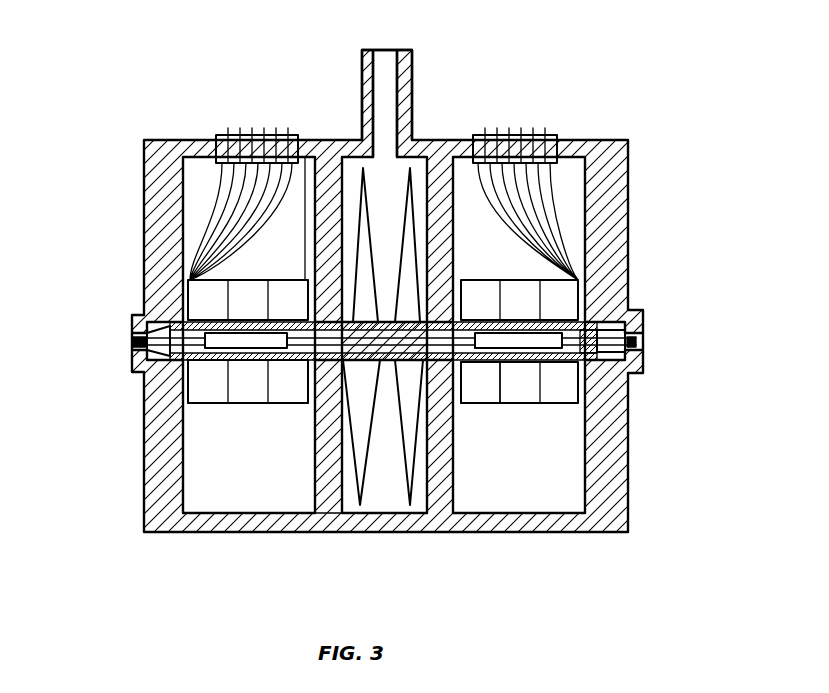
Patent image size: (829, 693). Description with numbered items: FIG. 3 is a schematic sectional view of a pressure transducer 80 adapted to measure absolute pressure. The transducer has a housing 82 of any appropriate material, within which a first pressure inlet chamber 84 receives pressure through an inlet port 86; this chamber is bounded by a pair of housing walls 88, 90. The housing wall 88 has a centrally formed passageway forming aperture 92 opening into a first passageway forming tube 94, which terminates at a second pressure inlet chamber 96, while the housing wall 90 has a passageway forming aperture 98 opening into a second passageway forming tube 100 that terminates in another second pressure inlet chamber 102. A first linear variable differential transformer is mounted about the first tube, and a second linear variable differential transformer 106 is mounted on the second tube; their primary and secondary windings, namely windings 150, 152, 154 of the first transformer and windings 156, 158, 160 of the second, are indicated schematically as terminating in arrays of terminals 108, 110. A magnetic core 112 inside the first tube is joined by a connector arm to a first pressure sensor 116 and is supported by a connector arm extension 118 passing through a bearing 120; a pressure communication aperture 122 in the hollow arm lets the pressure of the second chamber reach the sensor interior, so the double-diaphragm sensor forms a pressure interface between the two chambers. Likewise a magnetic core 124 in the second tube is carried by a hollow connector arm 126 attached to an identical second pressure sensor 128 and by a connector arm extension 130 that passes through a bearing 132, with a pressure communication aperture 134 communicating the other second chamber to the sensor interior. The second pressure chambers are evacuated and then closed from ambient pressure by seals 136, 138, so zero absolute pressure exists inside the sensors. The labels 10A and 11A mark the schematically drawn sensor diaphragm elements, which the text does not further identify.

The pressure transducer 80 is at (424, 291).
The housing 82 is at (605, 182).
The first pressure inlet chamber 84 is at (404, 172).
The inlet port 86 is at (415, 65).
The housing wall 88 is at (447, 500).
The housing wall 90 is at (337, 498).
The passageway forming aperture 92 is at (452, 408).
The first passageway forming tube 94 is at (470, 335).
The second pressure inlet chamber 96 is at (640, 302).
The passageway forming aperture 98 is at (275, 368).
The second passageway forming tube 100 is at (235, 348).
The other second pressure inlet chamber 102 is at (150, 352).
The second linear variable differential transformer 106 is at (302, 275).
The array of terminals 108 is at (515, 132).
The array of terminals 110 is at (290, 132).
The magnetic core 112 is at (588, 332).
The first pressure sensor 116 is at (386, 518).
The connector arm extension 118 is at (612, 378).
The bearing 120 is at (640, 355).
The pressure communication aperture 122 is at (620, 300).
The magnetic core 124 is at (195, 364).
The connector arm 126 is at (326, 410).
The second pressure sensor 128 is at (352, 500).
The connector arm extension 130 is at (205, 358).
The bearing 132 is at (160, 340).
The pressure communication aperture 134 is at (255, 362).
The seal 136 is at (645, 344).
The seal 138 is at (133, 343).
The primary winding 150 is at (520, 410).
The first secondary winding 152 is at (560, 406).
The second secondary winding 154 is at (512, 406).
The primary winding 156 is at (208, 262).
The first secondary winding 158 is at (288, 292).
The second secondary winding 160 is at (210, 282).
The upper pole piece 10A is at (478, 276).
The upper reed 11A is at (405, 338).